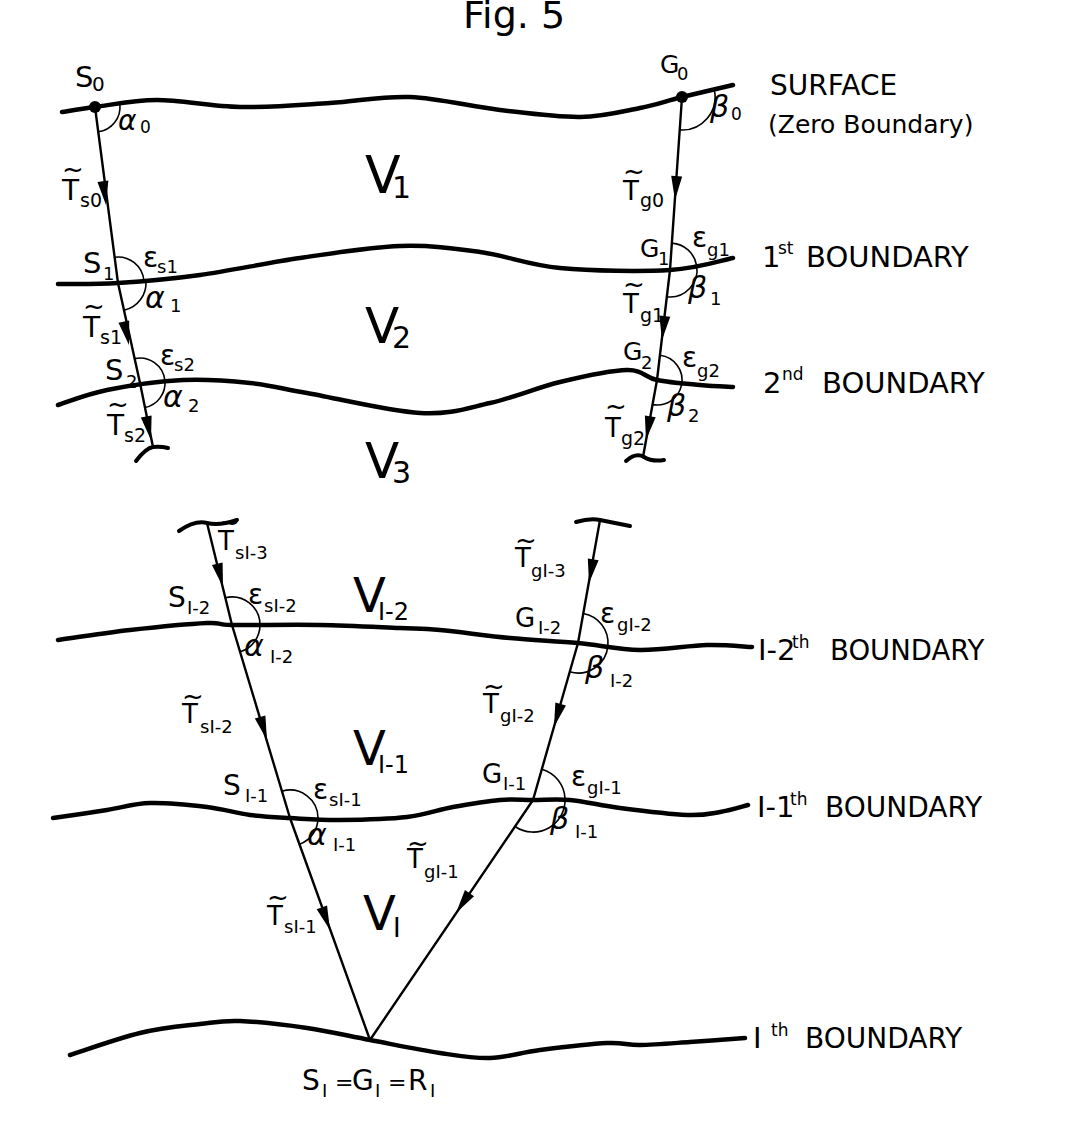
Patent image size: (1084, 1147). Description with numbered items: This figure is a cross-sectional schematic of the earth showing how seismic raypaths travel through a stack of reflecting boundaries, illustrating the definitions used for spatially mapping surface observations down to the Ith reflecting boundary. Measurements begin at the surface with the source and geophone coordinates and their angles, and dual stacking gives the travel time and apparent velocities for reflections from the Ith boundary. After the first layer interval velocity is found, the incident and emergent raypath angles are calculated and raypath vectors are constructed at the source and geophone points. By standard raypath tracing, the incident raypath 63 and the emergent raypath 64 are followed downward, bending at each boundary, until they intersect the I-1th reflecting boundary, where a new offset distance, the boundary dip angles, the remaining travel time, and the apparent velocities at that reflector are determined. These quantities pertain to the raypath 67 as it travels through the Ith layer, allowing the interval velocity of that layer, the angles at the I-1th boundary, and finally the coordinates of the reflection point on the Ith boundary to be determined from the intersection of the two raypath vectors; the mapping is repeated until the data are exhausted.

The incident raypath 63 is at (110, 208).
The emergent raypath 64 is at (678, 157).
The raypath 67 is at (404, 992).